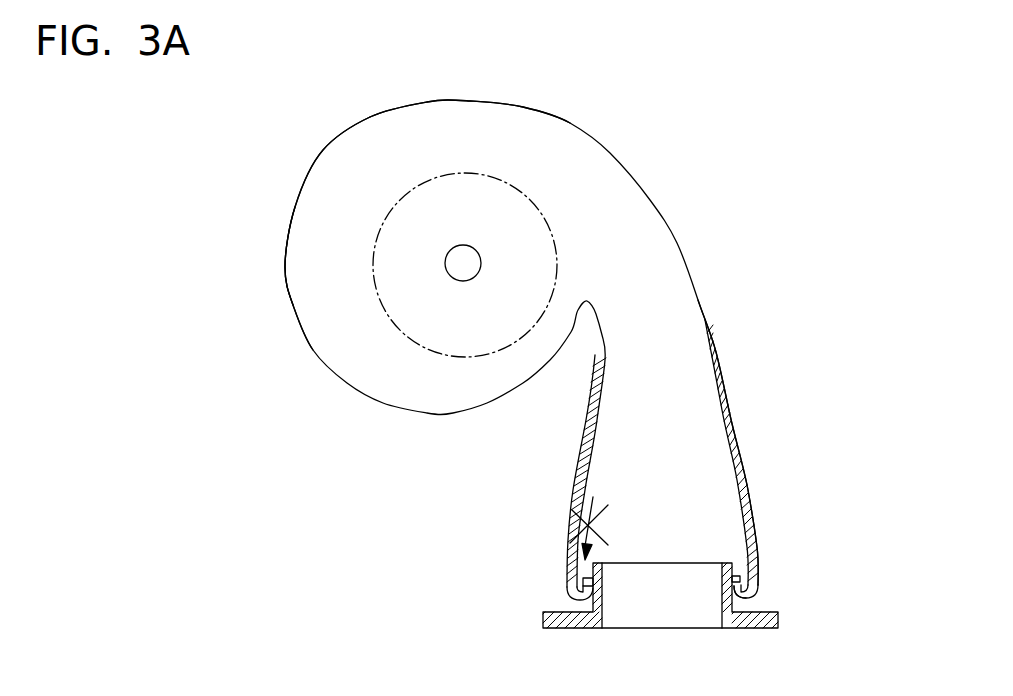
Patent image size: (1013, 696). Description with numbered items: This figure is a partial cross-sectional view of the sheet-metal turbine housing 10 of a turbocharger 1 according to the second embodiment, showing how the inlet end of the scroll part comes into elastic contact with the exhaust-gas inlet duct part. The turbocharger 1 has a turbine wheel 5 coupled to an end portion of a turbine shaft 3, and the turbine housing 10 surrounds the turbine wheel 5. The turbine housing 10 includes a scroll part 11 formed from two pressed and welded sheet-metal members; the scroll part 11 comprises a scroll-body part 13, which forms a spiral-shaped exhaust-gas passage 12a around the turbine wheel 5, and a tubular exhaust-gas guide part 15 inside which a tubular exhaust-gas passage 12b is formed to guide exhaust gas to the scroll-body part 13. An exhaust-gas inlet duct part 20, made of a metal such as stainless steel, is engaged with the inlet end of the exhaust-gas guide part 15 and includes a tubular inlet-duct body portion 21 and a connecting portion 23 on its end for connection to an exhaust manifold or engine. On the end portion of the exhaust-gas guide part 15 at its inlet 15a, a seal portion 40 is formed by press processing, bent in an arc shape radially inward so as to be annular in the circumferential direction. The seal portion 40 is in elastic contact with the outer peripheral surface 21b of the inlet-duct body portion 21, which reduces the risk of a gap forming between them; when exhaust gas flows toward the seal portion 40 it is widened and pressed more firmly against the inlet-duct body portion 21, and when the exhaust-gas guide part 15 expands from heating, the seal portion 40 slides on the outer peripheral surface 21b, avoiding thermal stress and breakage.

The turbocharger 1 is at (708, 127).
The turbine housing 10 is at (581, 99).
The scroll part 11 is at (428, 93).
The exhaust-gas passage 12a is at (352, 187).
The exhaust-gas passage 12b is at (683, 383).
The scroll-body part 13 is at (287, 246).
The turbine shaft 3 is at (450, 276).
The turbine wheel 5 is at (474, 357).
The exhaust-gas guide part 15 is at (746, 437).
The inlet 15a is at (695, 580).
The exhaust-gas inlet duct part 20 is at (802, 625).
The inlet-duct body portion 21 is at (700, 592).
The outer peripheral surface 21b is at (730, 572).
The connecting portion 23 is at (752, 627).
The seal portion 40 is at (772, 590).